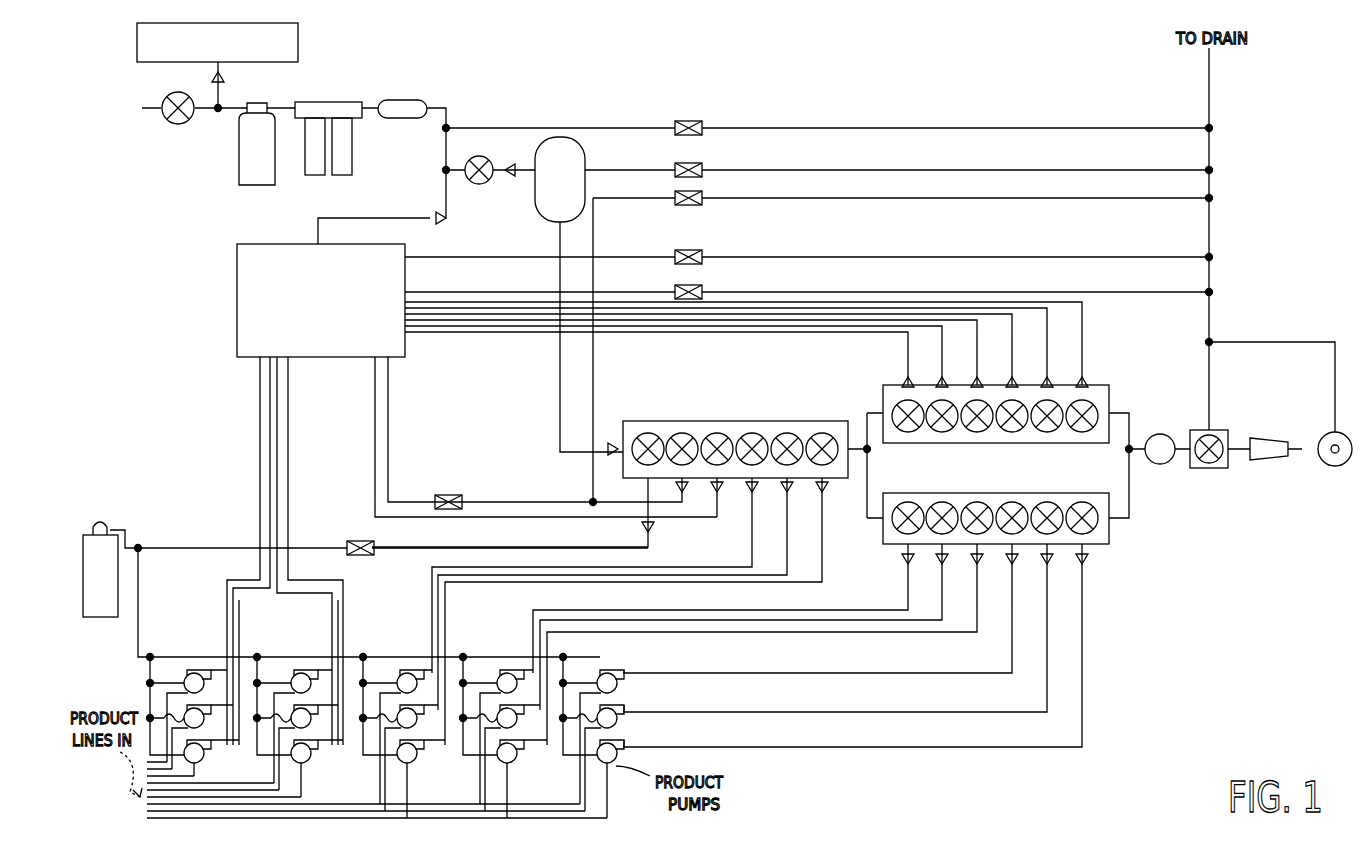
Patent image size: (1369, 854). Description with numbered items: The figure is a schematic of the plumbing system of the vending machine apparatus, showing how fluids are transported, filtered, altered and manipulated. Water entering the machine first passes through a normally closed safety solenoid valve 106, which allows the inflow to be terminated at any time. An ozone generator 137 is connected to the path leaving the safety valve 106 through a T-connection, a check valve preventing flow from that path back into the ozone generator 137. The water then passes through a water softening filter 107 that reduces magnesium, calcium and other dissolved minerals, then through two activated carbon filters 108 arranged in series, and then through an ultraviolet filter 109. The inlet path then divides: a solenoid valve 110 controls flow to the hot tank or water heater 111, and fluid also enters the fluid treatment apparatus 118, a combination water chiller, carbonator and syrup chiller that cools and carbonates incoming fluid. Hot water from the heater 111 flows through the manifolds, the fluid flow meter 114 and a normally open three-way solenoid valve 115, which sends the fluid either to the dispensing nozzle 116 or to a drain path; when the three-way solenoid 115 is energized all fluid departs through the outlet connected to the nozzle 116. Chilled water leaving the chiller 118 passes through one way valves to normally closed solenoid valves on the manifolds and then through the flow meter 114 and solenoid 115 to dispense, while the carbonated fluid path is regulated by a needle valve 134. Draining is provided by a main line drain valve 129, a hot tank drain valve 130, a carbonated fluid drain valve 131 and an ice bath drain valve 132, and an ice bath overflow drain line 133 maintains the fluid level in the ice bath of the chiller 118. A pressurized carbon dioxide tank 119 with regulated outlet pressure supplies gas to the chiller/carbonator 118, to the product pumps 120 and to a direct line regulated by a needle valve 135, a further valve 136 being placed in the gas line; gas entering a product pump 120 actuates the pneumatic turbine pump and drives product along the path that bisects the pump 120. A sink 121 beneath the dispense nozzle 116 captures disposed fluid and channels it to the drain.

The safety solenoid valve 106 is at (175, 125).
The water softening filter 107 is at (230, 186).
The activated carbon filters 108 is at (328, 102).
The ultraviolet filter 109 is at (403, 100).
The solenoid valve 110 is at (480, 184).
The hot tank 111 is at (585, 155).
The fluid flow meter 114 is at (1165, 465).
The 3-way normally open solenoid valve 115 is at (1216, 424).
The dispensing nozzle 116 is at (1271, 438).
The fluid treatment apparatus 118 is at (237, 270).
The carbon dioxide tank 119 is at (102, 516).
The product pump 120 is at (618, 758).
The sink 121 is at (1335, 466).
The main line drain valve 129 is at (688, 121).
The hot tank drain valve 130 is at (704, 163).
The carbonated fluid drain valve 131 is at (706, 198).
The ice bath drain valve 132 is at (704, 257).
The ice bath overflow drain line 133 is at (705, 290).
The needle valve 134 is at (446, 492).
The needle valve 135 is at (318, 220).
The CO2 valve 136 is at (356, 538).
The ozone generator 137 is at (135, 50).